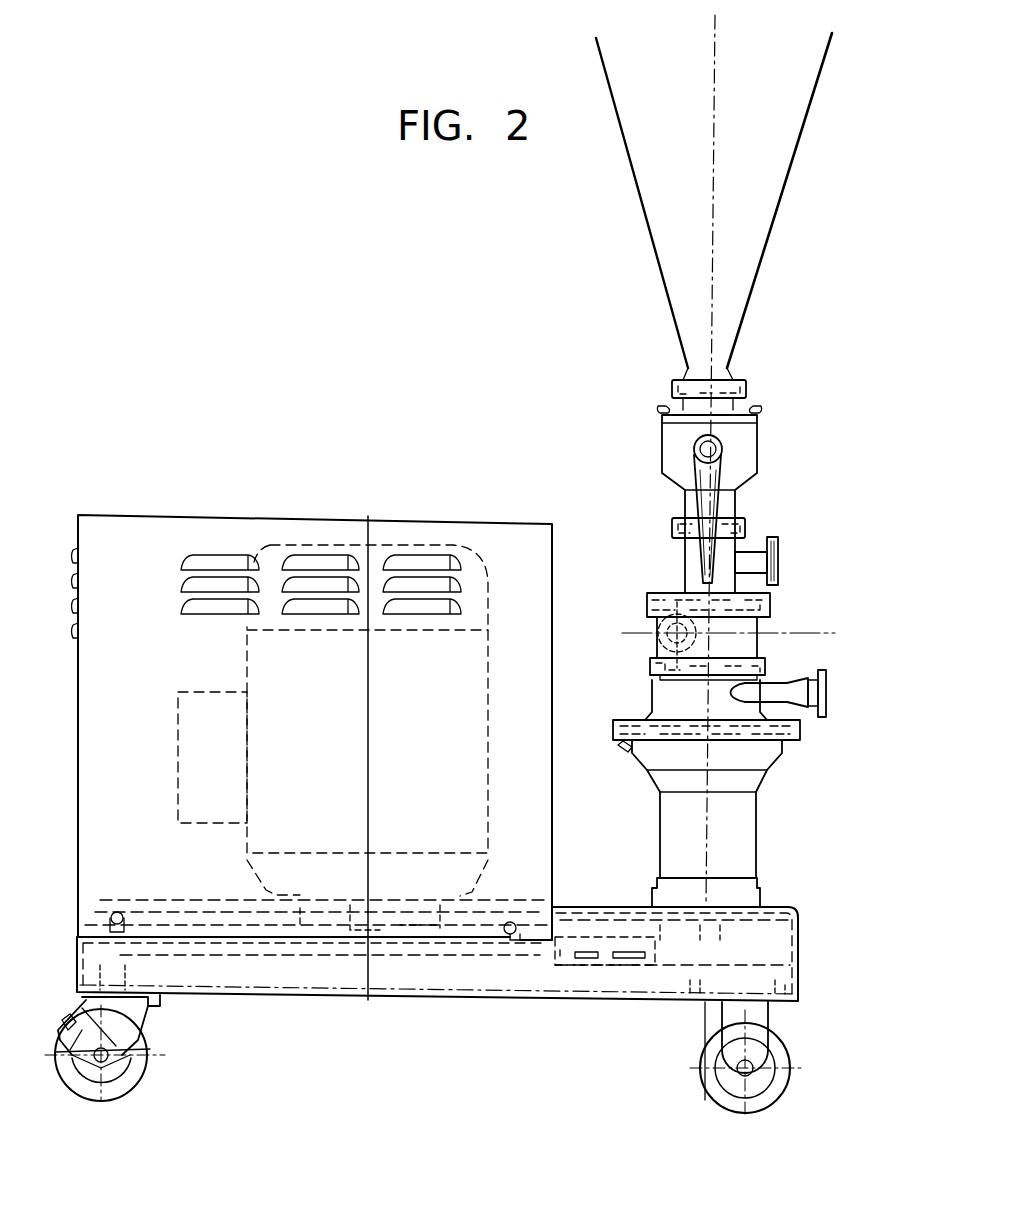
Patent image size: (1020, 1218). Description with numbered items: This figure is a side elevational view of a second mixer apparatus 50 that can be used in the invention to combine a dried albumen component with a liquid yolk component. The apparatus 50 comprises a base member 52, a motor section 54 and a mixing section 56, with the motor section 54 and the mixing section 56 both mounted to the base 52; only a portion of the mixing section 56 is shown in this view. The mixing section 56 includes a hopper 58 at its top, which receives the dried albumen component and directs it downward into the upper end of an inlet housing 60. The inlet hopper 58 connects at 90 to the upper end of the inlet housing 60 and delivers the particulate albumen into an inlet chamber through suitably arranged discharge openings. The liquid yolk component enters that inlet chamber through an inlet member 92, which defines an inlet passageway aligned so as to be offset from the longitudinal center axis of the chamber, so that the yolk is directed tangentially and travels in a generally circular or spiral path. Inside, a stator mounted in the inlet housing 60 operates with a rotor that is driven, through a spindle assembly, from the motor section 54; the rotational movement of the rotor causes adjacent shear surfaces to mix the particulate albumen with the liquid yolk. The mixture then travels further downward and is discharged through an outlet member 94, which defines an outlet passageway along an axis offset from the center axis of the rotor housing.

The apparatus 50 is at (826, 656).
The base member 52 is at (568, 990).
The motor section 54 is at (376, 512).
The mixing section 56 is at (786, 619).
The hopper 58 is at (748, 297).
The inlet housing 60 is at (752, 425).
The connection of hopper to inlet housing 90 is at (740, 385).
The inlet member 92 is at (750, 552).
The outlet member 94 is at (803, 702).